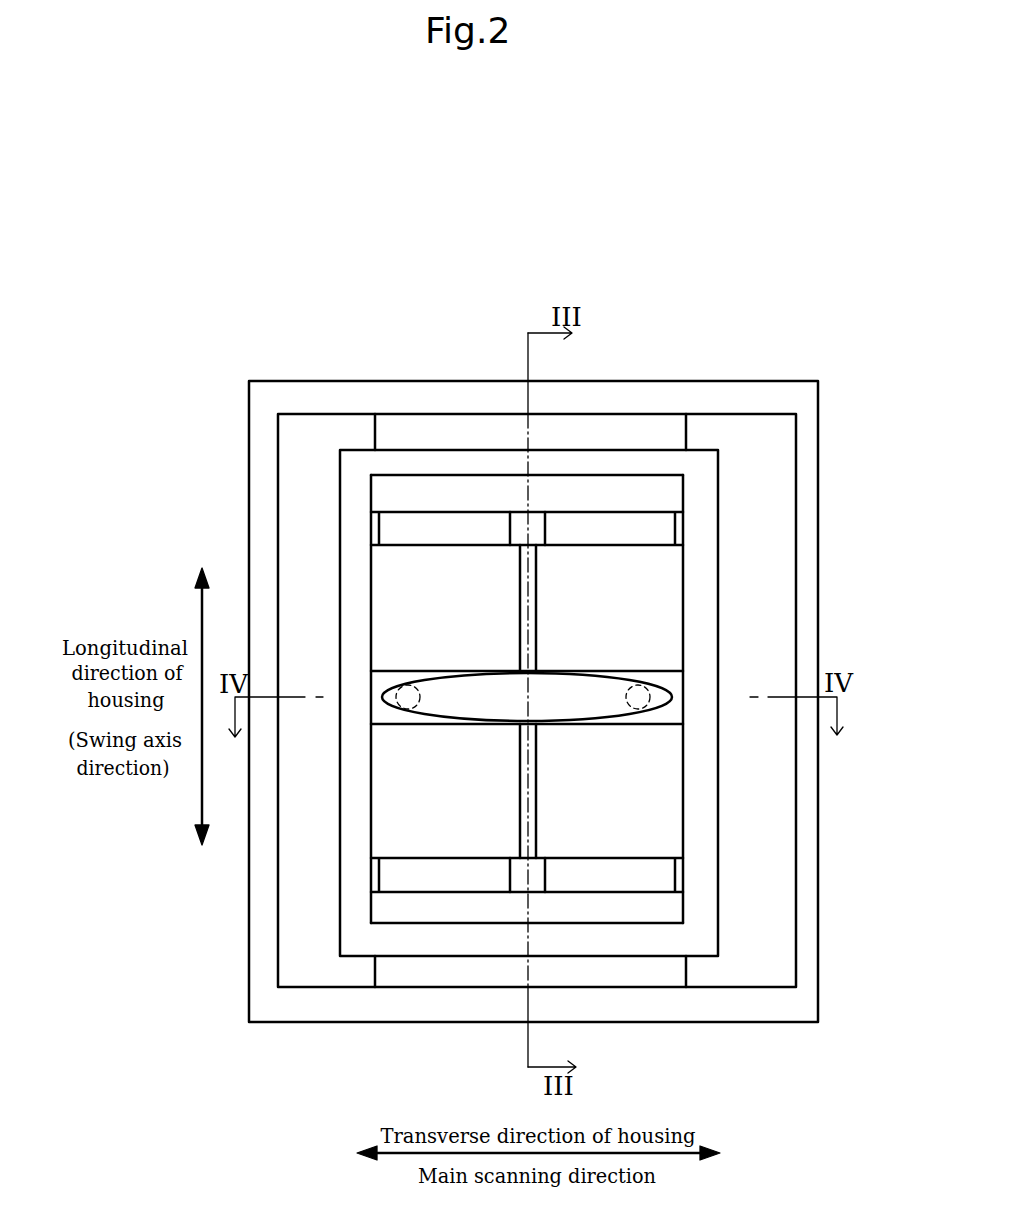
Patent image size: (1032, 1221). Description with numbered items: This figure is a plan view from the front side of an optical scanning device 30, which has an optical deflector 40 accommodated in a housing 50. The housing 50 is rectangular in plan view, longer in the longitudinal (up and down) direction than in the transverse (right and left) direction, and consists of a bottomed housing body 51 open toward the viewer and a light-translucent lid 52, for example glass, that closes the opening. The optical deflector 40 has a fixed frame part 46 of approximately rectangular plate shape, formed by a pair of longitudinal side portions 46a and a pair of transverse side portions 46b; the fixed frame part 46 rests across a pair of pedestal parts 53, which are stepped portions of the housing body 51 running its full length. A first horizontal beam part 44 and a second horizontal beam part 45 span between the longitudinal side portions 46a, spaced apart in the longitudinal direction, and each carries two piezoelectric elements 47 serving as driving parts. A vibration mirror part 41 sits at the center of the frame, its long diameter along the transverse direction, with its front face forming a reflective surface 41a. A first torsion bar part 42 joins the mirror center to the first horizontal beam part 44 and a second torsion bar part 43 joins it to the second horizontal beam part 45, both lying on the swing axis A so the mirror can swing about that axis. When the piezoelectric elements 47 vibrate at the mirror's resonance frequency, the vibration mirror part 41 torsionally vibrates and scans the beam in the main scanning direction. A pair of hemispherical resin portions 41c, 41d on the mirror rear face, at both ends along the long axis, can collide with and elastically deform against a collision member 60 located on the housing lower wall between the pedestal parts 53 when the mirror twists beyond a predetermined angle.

The optical scanning device 30 is at (236, 325).
The optical deflector 40 is at (720, 516).
The vibration mirror part 41 is at (603, 678).
The reflective surface 41a is at (565, 690).
The resin portion 41c is at (650, 686).
The resin portion 41d is at (424, 688).
The first torsion bar part 42 is at (520, 590).
The second torsion bar part 43 is at (521, 830).
The first horizontal beam part 44 is at (522, 512).
The second horizontal beam part 45 is at (522, 892).
The fixed frame part 46 is at (338, 578).
The longitudinal side portion 46a is at (355, 655).
The transverse side portion 46b is at (558, 467).
The piezoelectric element 47 is at (581, 527).
The housing 50 is at (313, 381).
The housing body 51 is at (807, 768).
The lid 52 is at (790, 800).
The pedestal part 53 is at (375, 972).
The collision member 60 is at (403, 718).
The swing axis A is at (537, 578).